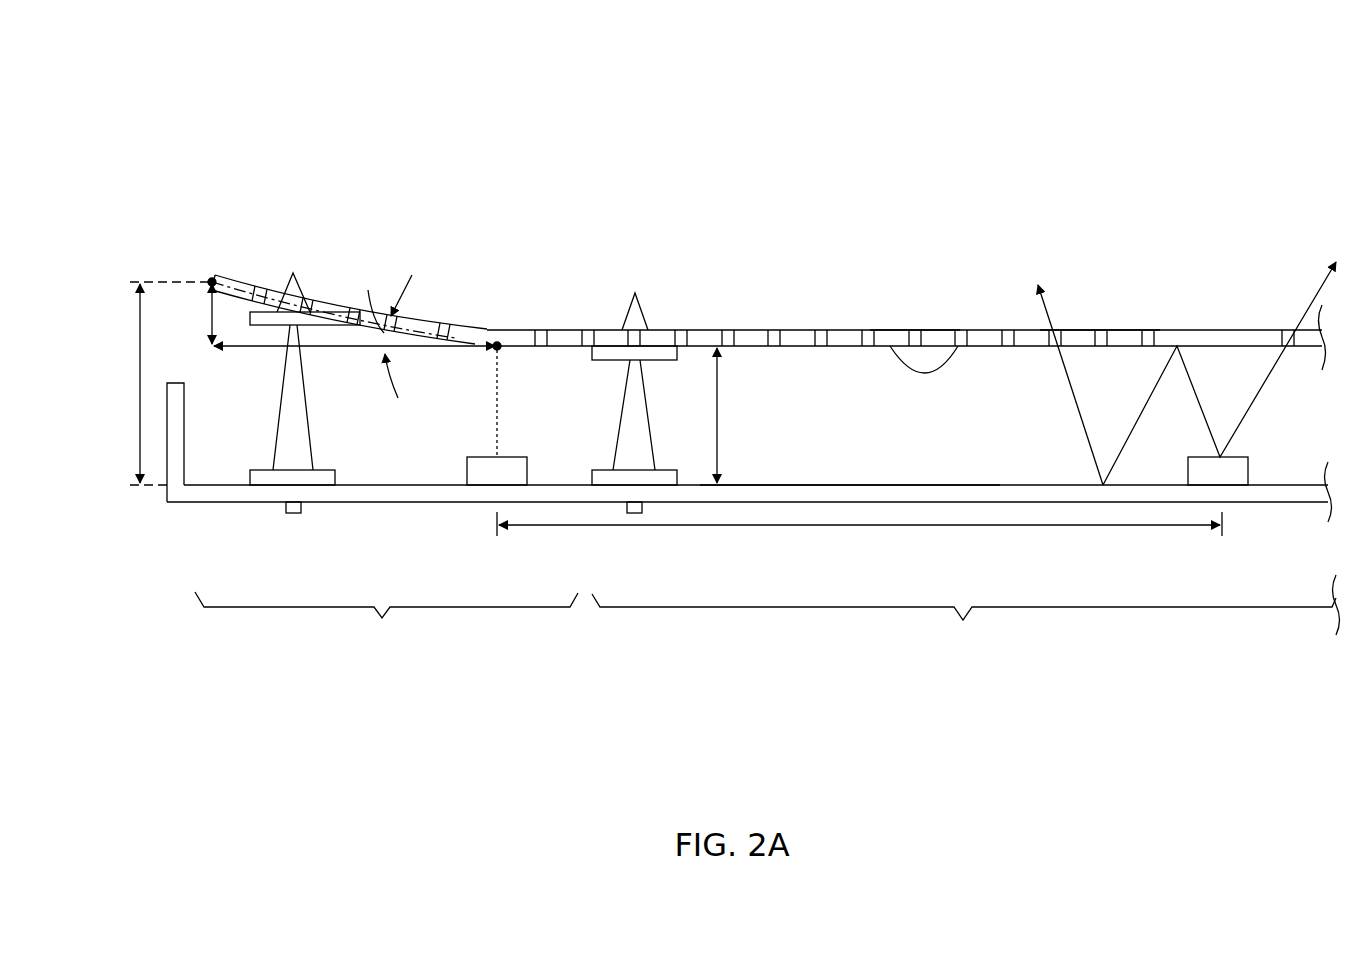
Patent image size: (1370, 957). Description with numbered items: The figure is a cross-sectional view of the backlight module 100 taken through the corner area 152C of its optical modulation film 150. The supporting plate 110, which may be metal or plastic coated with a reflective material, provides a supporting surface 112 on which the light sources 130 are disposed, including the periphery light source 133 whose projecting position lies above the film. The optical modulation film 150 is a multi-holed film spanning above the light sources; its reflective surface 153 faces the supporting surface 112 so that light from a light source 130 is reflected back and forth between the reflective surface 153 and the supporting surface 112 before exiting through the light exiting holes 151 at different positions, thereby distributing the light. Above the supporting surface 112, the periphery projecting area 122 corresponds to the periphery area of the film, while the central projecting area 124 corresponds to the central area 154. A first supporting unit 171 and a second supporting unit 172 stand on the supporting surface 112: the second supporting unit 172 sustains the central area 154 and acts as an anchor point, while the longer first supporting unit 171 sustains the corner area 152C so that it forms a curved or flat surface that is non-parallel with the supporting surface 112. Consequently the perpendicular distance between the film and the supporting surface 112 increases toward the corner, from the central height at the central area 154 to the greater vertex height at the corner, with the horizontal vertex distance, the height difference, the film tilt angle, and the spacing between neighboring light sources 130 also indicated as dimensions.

The backlight module 100 is at (195, 135).
The supporting plate 110 is at (846, 500).
The supporting surface 112 is at (912, 485).
The periphery projecting area 122 is at (386, 621).
The central projecting area 124 is at (966, 614).
The light source 130 is at (1228, 465).
The periphery light source 133 is at (495, 470).
The optical modulation film 150 is at (745, 328).
The light exiting holes 151 is at (1100, 340).
The corner area 152C is at (336, 296).
The reflective surface 153 is at (958, 346).
The central area 154 is at (893, 318).
The first supporting unit 171 is at (290, 475).
The second supporting unit 172 is at (633, 393).